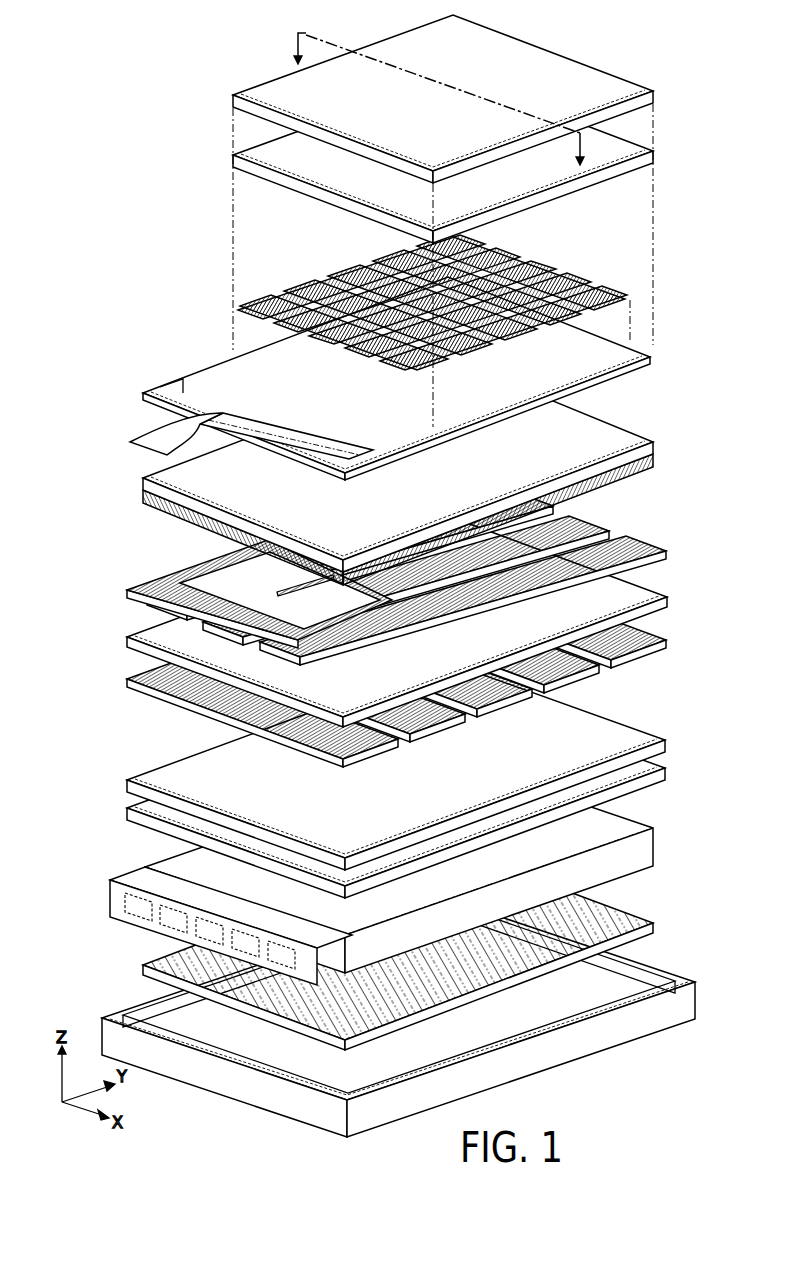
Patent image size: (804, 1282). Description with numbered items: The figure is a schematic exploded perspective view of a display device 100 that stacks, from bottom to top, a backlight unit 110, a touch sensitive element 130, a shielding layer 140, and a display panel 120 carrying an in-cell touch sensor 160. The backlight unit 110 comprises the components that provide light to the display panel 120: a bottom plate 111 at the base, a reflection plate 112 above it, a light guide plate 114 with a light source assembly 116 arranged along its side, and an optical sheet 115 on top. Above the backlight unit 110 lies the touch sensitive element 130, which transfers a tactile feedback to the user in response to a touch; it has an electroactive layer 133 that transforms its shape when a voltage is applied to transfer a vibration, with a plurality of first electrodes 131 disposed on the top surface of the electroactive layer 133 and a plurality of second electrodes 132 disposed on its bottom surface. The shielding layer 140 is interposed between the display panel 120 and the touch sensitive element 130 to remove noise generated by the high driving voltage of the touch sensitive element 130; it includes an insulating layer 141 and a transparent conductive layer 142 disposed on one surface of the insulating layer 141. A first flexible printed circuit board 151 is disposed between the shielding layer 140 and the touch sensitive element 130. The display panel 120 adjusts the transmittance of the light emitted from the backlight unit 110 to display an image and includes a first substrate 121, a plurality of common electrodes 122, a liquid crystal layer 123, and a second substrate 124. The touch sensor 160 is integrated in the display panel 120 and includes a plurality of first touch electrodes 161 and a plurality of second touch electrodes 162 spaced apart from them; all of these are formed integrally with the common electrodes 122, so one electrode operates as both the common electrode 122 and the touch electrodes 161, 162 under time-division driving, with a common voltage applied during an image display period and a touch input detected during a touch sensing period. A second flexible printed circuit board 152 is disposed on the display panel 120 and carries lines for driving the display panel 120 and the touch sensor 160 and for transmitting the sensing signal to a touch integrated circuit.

The display device 100 is at (419, 576).
The backlight unit 110 is at (417, 899).
The bottom plate 111 is at (630, 980).
The reflection plate 112 is at (605, 925).
The light guide plate 114 is at (645, 850).
The optical sheet 115 is at (424, 780).
The light source assembly 116 is at (115, 900).
The display panel 120 is at (456, 247).
The first substrate 121 is at (650, 358).
The common electrodes 122 is at (473, 282).
The liquid crystal layer 123 is at (653, 153).
The second substrate 124 is at (471, 99).
The touch sensitive element 130 is at (459, 629).
The first electrodes 131 is at (737, 665).
The second electrodes 132 is at (620, 690).
The electroactive layer 133 is at (660, 602).
The shielding layer 140 is at (455, 472).
The insulating layer 141 is at (655, 446).
The transparent conductive layer 142 is at (655, 460).
The first flexible printed circuit board 151 is at (207, 580).
The second flexible printed circuit board 152 is at (187, 390).
The touch sensor 160 is at (432, 282).
The first touch electrodes 161 is at (262, 304).
The second touch electrodes 162 is at (383, 254).